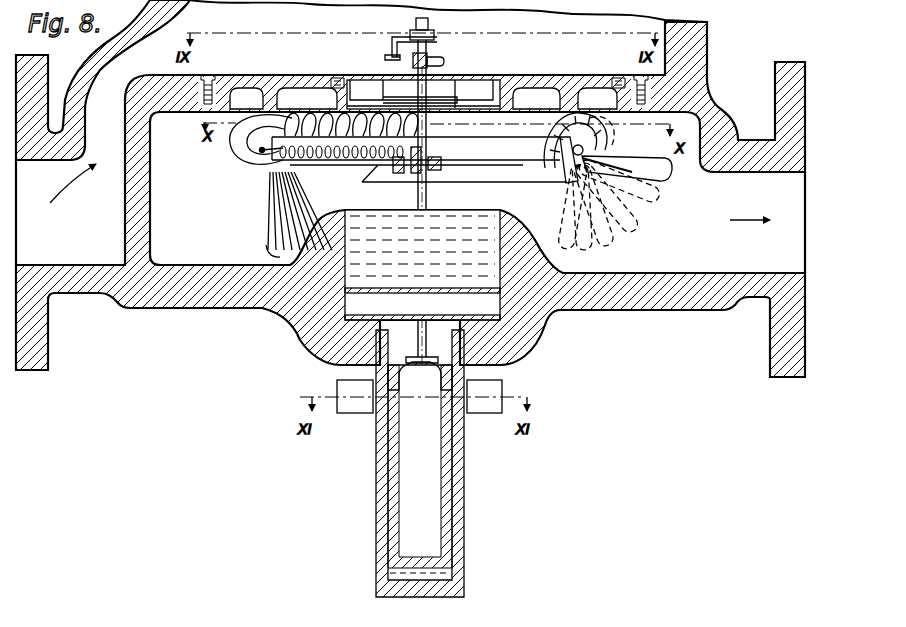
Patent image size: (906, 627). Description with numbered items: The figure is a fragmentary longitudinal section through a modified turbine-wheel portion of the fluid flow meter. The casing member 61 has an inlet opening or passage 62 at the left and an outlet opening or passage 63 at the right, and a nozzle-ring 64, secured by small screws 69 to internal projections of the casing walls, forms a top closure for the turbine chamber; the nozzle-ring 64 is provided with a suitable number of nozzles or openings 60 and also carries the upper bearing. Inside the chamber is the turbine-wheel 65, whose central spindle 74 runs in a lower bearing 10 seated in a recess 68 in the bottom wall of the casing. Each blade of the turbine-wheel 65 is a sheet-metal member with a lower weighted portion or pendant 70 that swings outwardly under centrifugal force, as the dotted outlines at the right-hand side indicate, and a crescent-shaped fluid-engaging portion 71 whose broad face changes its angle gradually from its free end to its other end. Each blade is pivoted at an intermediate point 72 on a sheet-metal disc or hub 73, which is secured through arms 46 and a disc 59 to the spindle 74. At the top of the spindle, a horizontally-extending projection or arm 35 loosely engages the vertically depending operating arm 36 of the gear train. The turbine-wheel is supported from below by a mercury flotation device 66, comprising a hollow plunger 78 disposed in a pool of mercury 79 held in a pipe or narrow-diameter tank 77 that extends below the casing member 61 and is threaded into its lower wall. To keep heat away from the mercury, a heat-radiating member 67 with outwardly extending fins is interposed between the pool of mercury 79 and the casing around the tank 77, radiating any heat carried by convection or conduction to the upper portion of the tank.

The lower bearing 10 is at (482, 90).
The projection or arm 35 is at (433, 56).
The operating arm 36 is at (392, 42).
The arms 46 is at (341, 164).
The disc 59 is at (382, 173).
The nozzles or openings 60 is at (276, 78).
The casing member 61 is at (167, 300).
The inlet opening or passage 62 is at (66, 198).
The outlet opening or passage 63 is at (759, 232).
The nozzle-ring 64 is at (234, 78).
The turbine-wheel 65 is at (246, 200).
The mercury flotation device 66 is at (441, 472).
The heat-radiating member 67 is at (488, 392).
The recess 68 is at (492, 264).
The small screws 69 is at (208, 74).
The lower weighted portion or pendant 70 is at (272, 228).
The fluid-engaging portion 71 is at (233, 141).
The intermediate pivot point 72 is at (250, 156).
The disc or hub 73 is at (267, 171).
The spindle 74 is at (428, 133).
The pipe or narrow-diameter tank 77 is at (461, 545).
The hollow plunger 78 is at (438, 526).
The pool of mercury 79 is at (443, 588).